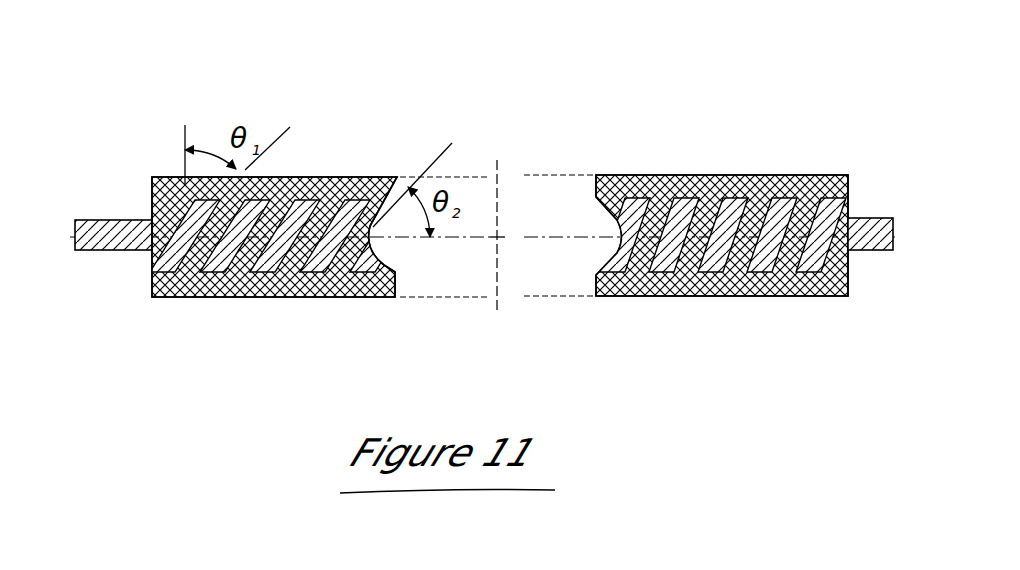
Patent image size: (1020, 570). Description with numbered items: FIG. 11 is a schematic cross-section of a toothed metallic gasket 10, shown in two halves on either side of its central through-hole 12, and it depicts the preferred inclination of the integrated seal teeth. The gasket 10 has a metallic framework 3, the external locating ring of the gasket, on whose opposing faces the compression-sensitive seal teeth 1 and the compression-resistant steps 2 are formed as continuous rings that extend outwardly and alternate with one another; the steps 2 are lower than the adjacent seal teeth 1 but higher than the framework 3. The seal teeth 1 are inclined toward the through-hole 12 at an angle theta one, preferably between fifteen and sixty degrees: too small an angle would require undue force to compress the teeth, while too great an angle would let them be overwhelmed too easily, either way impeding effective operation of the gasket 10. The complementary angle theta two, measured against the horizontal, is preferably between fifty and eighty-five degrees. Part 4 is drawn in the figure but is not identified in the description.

The toothed metallic gasket 10 is at (116, 50).
The seal teeth 1 is at (764, 95).
The compression-resistant steps 2 is at (843, 174).
The metallic framework 3 is at (122, 217).
The housing block 4 is at (328, 300).
The through-hole 12 is at (512, 215).